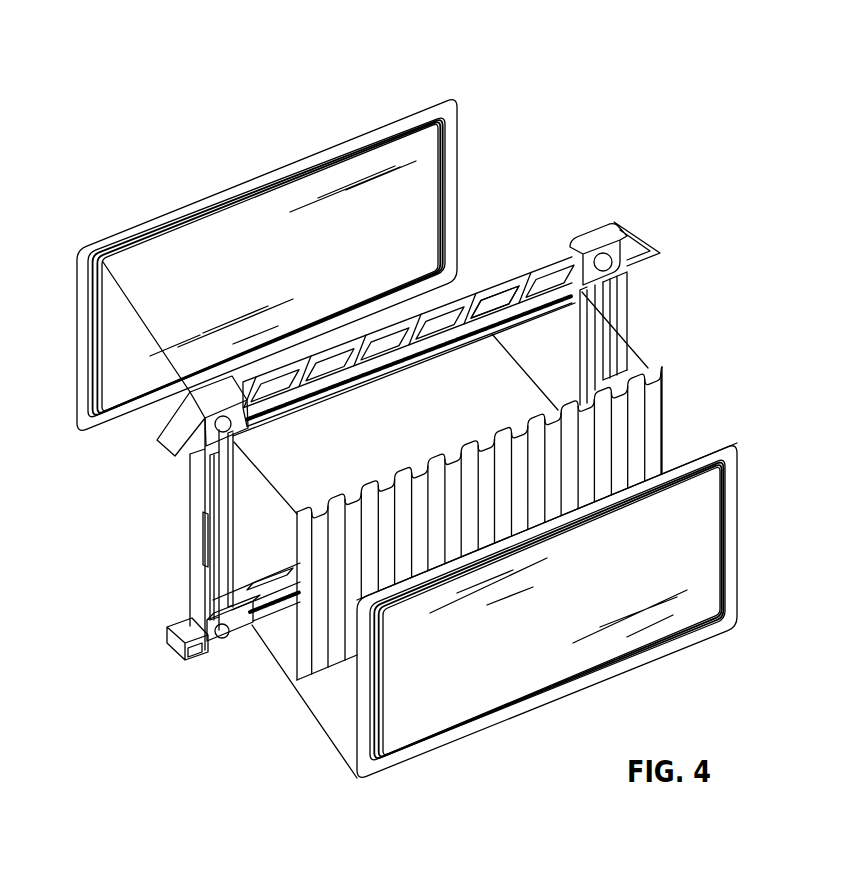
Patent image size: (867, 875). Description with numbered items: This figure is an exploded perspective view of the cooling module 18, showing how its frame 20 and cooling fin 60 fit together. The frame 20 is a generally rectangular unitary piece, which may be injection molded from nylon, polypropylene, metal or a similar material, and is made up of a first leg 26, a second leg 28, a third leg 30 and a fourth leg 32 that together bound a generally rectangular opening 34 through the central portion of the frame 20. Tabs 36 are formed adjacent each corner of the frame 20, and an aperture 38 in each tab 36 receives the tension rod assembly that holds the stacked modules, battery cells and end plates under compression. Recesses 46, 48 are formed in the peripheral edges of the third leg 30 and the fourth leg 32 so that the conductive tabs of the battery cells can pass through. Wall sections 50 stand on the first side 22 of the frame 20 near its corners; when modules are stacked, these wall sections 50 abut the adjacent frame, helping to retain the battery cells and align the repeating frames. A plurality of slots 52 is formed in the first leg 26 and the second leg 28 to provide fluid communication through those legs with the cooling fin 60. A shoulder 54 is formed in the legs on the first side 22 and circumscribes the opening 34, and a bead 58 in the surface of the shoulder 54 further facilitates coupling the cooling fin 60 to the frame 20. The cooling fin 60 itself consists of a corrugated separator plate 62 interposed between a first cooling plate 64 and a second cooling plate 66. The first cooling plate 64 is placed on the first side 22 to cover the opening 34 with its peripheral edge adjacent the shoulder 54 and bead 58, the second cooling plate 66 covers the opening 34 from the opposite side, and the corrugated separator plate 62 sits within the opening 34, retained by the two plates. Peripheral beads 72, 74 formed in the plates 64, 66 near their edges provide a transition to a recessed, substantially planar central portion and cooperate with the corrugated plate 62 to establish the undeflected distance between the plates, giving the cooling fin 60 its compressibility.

The cooling module 18 is at (660, 90).
The frame 20 is at (650, 236).
The first side 22 is at (350, 374).
The first leg 26 is at (506, 282).
The second leg 28 is at (280, 612).
The third leg 30 is at (188, 462).
The fourth leg 32 is at (630, 276).
The opening 34 is at (558, 334).
The tab 36 is at (609, 226).
The aperture 38 is at (598, 250).
The recess 46 is at (205, 548).
The recess 48 is at (202, 522).
The wall section 50 is at (207, 481).
The slot 52 is at (533, 290).
The shoulder 54 is at (234, 546).
The bead 58 is at (236, 522).
The cooling fin 60 is at (738, 434).
The corrugated separator plate 62 is at (663, 390).
The first cooling plate 64 is at (739, 478).
The second cooling plate 66 is at (459, 112).
The peripheral bead 72 is at (726, 534).
The peripheral bead 74 is at (447, 150).